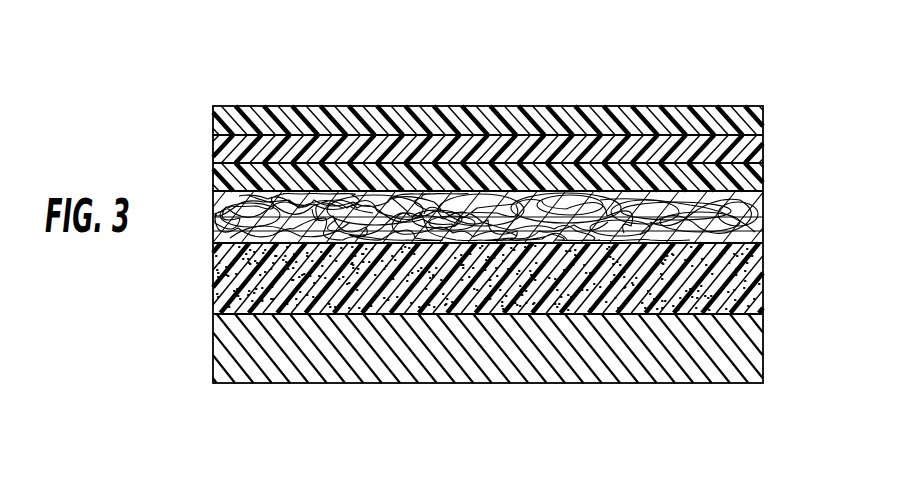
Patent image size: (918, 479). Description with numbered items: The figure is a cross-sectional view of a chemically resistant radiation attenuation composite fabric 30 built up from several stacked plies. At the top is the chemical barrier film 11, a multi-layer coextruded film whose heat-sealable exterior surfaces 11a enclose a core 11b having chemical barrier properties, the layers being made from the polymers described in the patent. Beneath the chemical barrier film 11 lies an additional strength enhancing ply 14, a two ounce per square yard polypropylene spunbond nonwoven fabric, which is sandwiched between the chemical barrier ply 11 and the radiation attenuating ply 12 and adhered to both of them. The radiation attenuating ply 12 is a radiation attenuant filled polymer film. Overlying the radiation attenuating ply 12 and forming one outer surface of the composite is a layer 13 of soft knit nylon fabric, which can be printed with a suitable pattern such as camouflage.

The chemically resistant radiation attenuation composite fabric 30 is at (521, 398).
The chemical barrier film 11 is at (782, 106).
The heat-sealable exterior surfaces 11a is at (645, 170).
The core 11b is at (695, 147).
The strength enhancing ply 14 is at (753, 224).
The radiation attenuating ply 12 is at (757, 297).
The knit fabric layer 13 is at (727, 370).